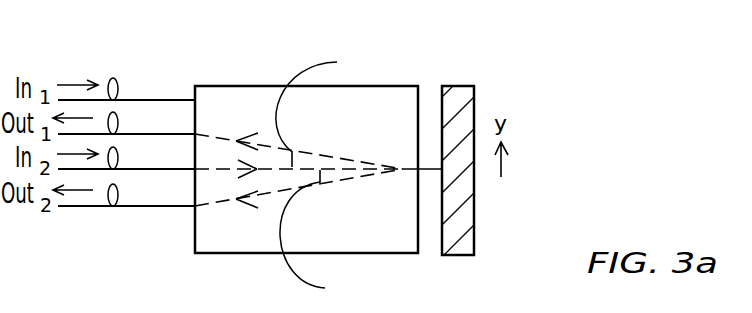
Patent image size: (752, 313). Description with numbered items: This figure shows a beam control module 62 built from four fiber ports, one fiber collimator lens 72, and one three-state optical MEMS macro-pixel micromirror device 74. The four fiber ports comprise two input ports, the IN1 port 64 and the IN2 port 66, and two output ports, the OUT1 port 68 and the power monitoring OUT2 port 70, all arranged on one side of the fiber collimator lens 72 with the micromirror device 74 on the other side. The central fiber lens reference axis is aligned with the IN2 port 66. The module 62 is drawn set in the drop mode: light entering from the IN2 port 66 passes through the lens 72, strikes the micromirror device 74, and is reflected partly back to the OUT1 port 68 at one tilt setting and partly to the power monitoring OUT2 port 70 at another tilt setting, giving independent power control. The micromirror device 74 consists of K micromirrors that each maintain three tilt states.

The beam control module 62 is at (439, 50).
The IN1 fiber port 64 is at (145, 100).
The IN2 fiber port 66 is at (157, 170).
The OUT1 fiber port 68 is at (158, 134).
The OUT2 power monitoring fiber port 70 is at (148, 207).
The fiber collimator lens 72 is at (374, 254).
The 3-state optical MEMS macro-pixel micromirror device 74 is at (475, 231).